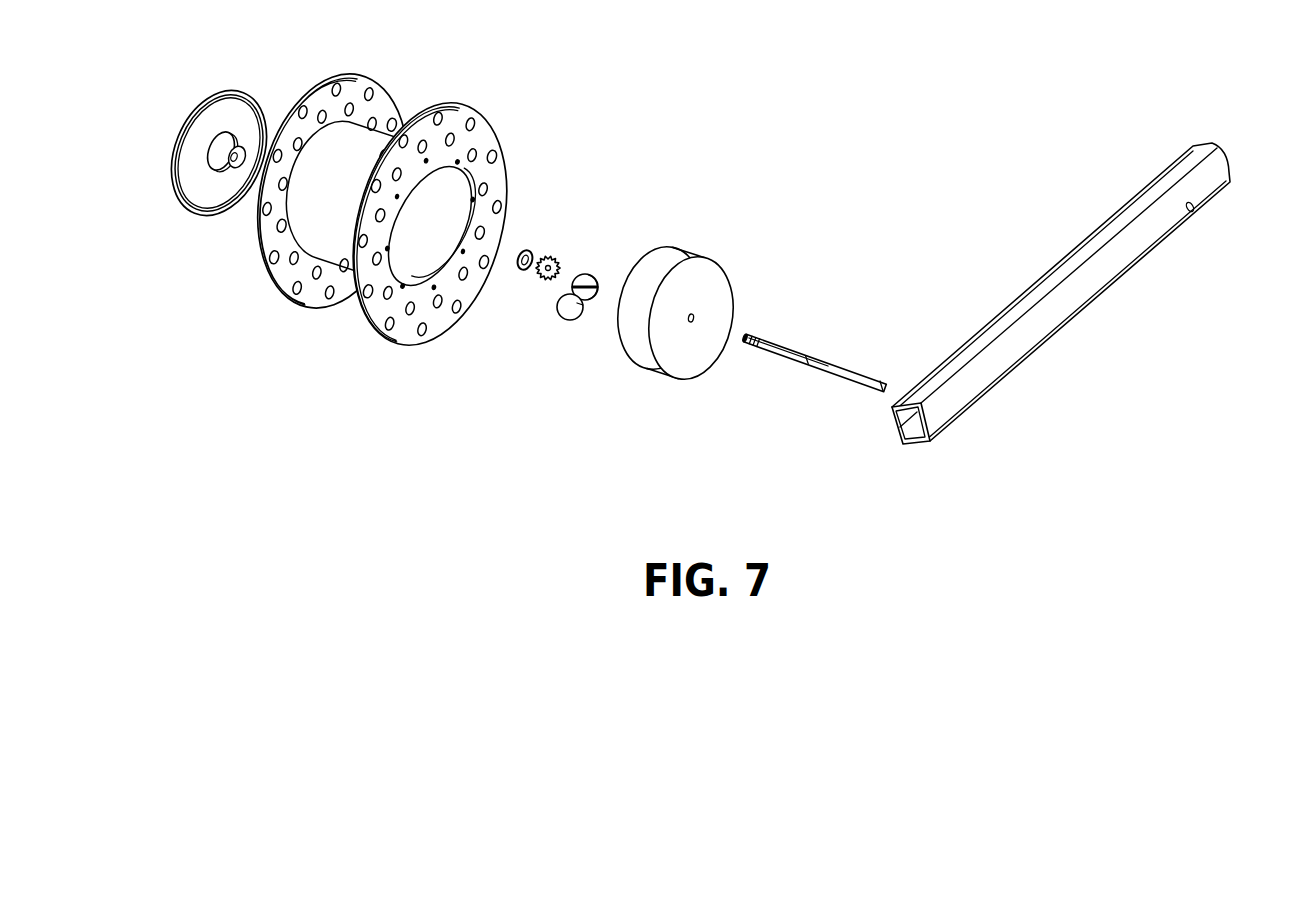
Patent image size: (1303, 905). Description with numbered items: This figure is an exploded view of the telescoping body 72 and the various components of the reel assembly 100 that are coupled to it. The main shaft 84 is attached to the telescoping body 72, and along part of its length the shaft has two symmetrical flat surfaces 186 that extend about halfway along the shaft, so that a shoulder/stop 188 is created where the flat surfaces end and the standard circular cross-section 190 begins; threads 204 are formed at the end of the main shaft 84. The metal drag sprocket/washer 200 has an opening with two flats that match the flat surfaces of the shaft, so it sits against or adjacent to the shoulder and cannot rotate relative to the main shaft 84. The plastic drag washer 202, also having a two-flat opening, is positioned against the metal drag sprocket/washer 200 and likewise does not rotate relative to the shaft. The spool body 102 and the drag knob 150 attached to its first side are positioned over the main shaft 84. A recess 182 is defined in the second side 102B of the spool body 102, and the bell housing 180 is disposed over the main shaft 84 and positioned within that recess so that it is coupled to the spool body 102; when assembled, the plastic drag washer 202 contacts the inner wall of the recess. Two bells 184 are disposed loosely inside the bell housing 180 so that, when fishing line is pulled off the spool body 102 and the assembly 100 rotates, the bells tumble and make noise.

The drag knob 150 is at (205, 103).
The reel assembly 100 is at (397, 249).
The spool body 102 is at (375, 140).
The second side 102B is at (522, 191).
The recess 182 is at (432, 250).
The plastic drag washer 202 is at (517, 264).
The metal drag sprocket/washer 200 is at (560, 261).
The bells 184 is at (589, 275).
The bell housing 180 is at (732, 277).
The threads 204 is at (793, 386).
The main shaft 84 is at (816, 386).
The flat surfaces 186 is at (772, 355).
The shoulder/stop 188 is at (807, 371).
The circular cross-section 190 is at (856, 386).
The telescoping body 72 is at (1083, 310).